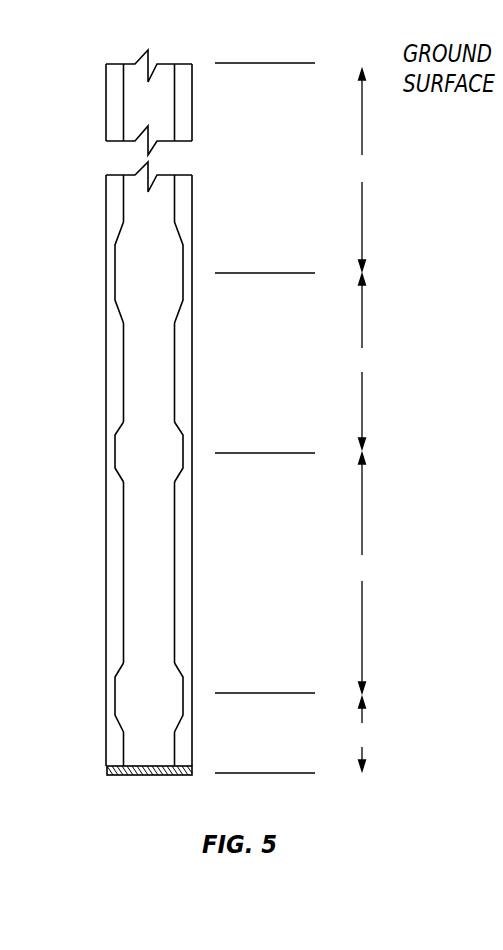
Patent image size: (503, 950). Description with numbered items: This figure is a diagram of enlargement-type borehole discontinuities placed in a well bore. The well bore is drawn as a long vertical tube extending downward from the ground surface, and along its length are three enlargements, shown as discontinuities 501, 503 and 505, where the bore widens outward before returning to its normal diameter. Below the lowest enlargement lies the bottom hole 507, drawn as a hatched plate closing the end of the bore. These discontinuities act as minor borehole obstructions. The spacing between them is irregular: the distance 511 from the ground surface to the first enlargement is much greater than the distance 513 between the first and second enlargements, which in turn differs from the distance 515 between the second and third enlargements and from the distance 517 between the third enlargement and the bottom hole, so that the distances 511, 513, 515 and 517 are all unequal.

The discontinuity 501 is at (114, 272).
The discontinuity 503 is at (114, 447).
The discontinuity 505 is at (114, 697).
The bottom hole 507 is at (118, 758).
The distance L511 511 is at (366, 170).
The distance L513 513 is at (365, 361).
The distance L515 515 is at (365, 573).
The distance L517 517 is at (365, 734).